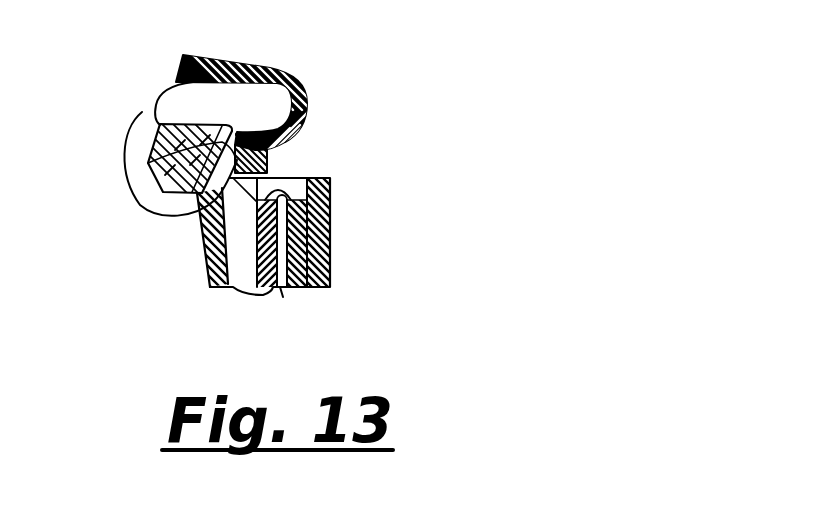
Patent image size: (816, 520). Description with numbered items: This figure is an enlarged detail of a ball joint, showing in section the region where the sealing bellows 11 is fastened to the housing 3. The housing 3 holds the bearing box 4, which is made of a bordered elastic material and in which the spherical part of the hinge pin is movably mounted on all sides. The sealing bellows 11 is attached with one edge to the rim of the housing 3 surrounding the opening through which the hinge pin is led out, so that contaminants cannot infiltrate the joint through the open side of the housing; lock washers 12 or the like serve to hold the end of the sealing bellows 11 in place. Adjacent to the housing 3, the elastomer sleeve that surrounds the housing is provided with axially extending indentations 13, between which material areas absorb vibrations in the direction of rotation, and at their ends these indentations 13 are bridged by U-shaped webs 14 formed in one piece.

The housing 3 is at (142, 112).
The bearing box 4 is at (213, 222).
The sealing bellows 11 is at (250, 62).
The lock washers 12 is at (267, 153).
The indentations 13 is at (283, 290).
The U-shaped webs 14 is at (267, 173).